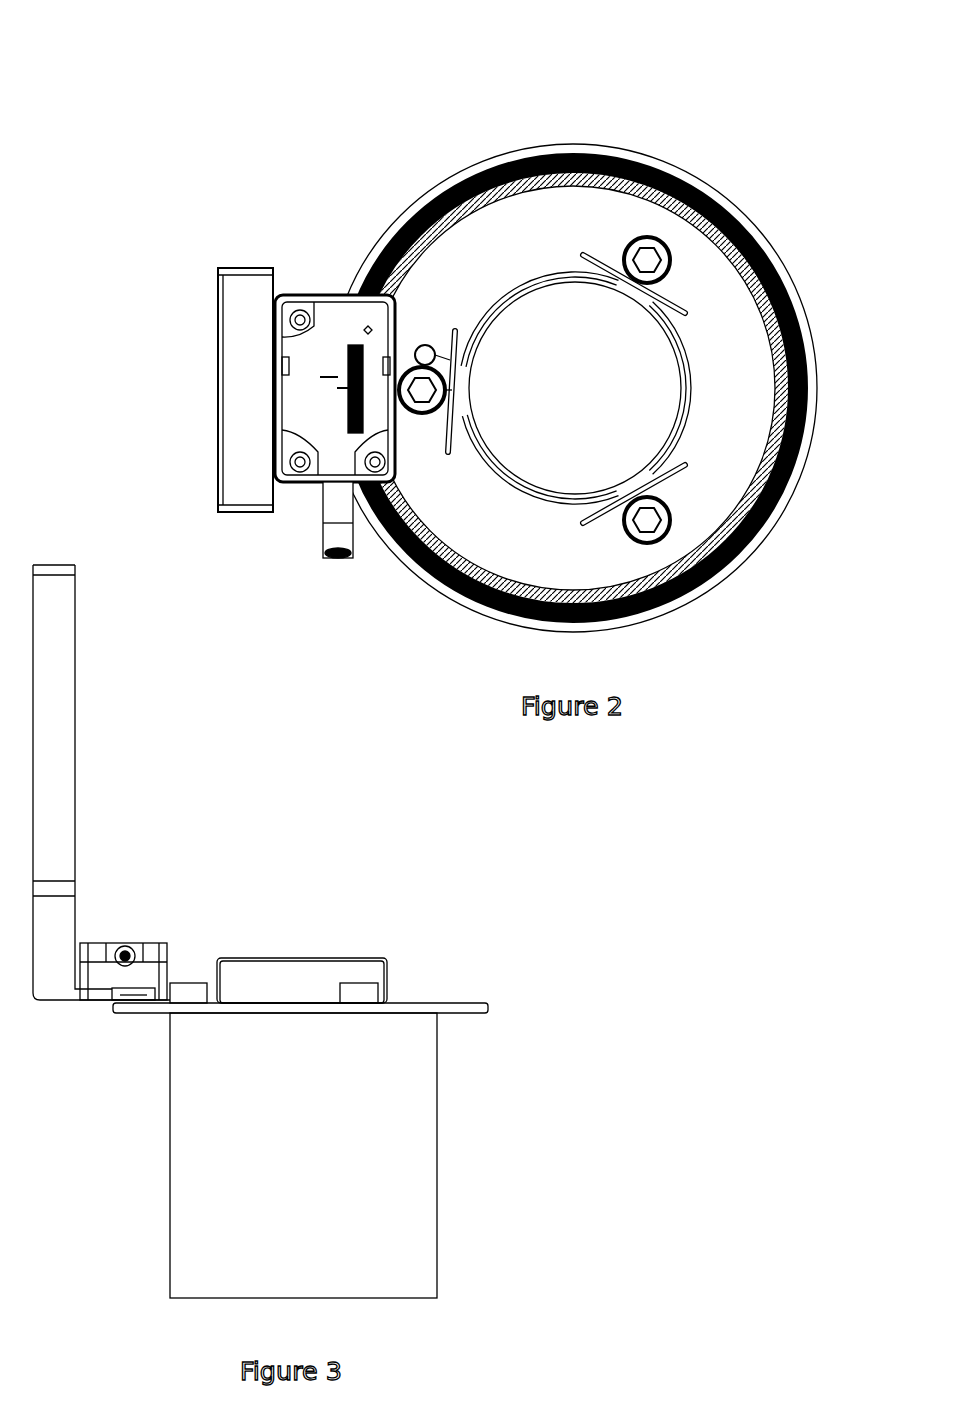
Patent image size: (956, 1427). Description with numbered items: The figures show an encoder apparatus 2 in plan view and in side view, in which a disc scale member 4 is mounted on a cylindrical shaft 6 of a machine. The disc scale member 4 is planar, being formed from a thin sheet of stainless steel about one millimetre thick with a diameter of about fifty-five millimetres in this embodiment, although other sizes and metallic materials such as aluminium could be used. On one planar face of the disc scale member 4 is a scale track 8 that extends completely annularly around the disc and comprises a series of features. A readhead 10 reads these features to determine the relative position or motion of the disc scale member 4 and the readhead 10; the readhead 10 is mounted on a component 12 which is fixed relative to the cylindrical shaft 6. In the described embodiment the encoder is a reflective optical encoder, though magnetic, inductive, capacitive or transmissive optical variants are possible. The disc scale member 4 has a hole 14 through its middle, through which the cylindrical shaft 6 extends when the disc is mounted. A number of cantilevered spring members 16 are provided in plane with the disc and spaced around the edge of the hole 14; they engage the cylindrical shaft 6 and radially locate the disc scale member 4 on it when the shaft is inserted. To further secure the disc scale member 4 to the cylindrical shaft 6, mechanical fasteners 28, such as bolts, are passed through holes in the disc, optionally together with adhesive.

In FIG. 2, the encoder apparatus 2 is at (743, 67).
In FIG. 3, the encoder apparatus 2 is at (279, 777).
In FIG. 2, the disc scale member 4 is at (437, 190).
In FIG. 3, the disc scale member 4 is at (482, 1002).
In FIG. 2, the cylindrical shaft 6 is at (580, 405).
In FIG. 3, the cylindrical shaft 6 is at (312, 1154).
In FIG. 2, the scale track 8 is at (585, 188).
In FIG. 2, the readhead 10 is at (337, 327).
In FIG. 3, the readhead 10 is at (145, 945).
In FIG. 2, the component 12 is at (230, 340).
In FIG. 3, the component 12 is at (66, 804).
In FIG. 2, the hole 14 is at (687, 357).
In FIG. 2, the cantilevered spring members 16 is at (447, 335).
In FIG. 2, the mechanical fasteners 28 is at (633, 285).
In FIG. 3, the mechanical fasteners 28 is at (197, 992).